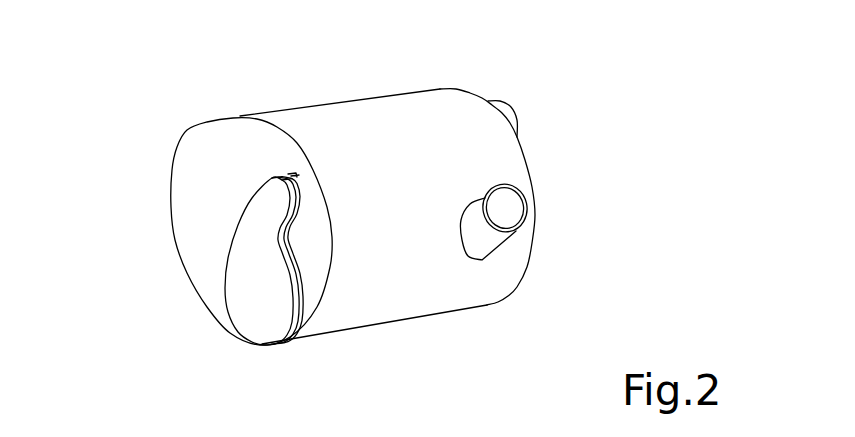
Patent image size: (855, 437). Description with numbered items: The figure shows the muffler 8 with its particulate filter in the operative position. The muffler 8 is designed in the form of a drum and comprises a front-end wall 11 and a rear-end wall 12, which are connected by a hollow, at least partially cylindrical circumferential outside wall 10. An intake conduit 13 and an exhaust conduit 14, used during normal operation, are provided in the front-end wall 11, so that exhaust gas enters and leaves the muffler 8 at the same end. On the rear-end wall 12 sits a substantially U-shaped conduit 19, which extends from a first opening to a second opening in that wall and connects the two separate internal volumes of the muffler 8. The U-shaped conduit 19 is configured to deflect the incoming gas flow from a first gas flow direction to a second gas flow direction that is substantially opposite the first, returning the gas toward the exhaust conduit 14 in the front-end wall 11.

The muffler 8 is at (153, 78).
The circumferential outside wall 10 is at (342, 115).
The front-end wall 11 is at (522, 293).
The rear-end wall 12 is at (192, 168).
The intake conduit 13 is at (542, 242).
The exhaust conduit 14 is at (533, 112).
The U-shaped conduit 19 is at (252, 320).